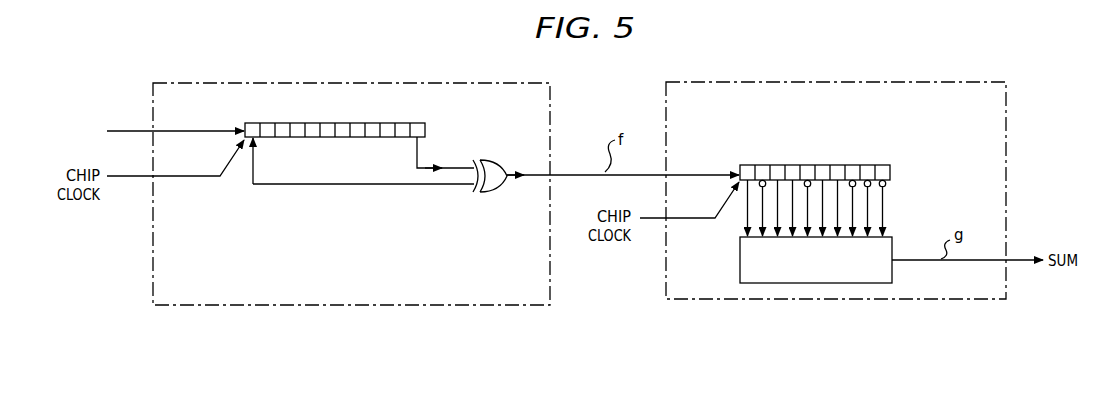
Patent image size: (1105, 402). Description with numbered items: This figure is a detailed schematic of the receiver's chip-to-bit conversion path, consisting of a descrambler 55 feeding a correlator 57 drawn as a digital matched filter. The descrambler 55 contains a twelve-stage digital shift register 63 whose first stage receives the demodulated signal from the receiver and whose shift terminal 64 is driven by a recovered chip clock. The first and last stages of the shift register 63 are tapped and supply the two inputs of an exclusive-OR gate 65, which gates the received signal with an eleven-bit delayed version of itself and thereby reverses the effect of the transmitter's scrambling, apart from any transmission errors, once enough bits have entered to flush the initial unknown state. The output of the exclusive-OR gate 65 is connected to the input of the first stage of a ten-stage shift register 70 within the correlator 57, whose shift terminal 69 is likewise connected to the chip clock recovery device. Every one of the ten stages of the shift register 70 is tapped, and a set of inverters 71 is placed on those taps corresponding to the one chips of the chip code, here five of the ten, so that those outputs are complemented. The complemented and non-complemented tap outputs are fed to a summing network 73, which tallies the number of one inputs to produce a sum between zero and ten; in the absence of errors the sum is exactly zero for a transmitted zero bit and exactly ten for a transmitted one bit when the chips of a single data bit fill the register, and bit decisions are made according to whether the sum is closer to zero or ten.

The descrambler 55 is at (232, 82).
The correlator 57 is at (717, 82).
The 12-stage digital shift register 63 is at (311, 138).
The shift terminal 64 is at (188, 177).
The exclusive-OR gate 65 is at (502, 160).
The shift terminal 69 is at (681, 219).
The 10-stage shift register 70 is at (805, 165).
The inverters 71 is at (752, 172).
The summing network 73 is at (770, 268).